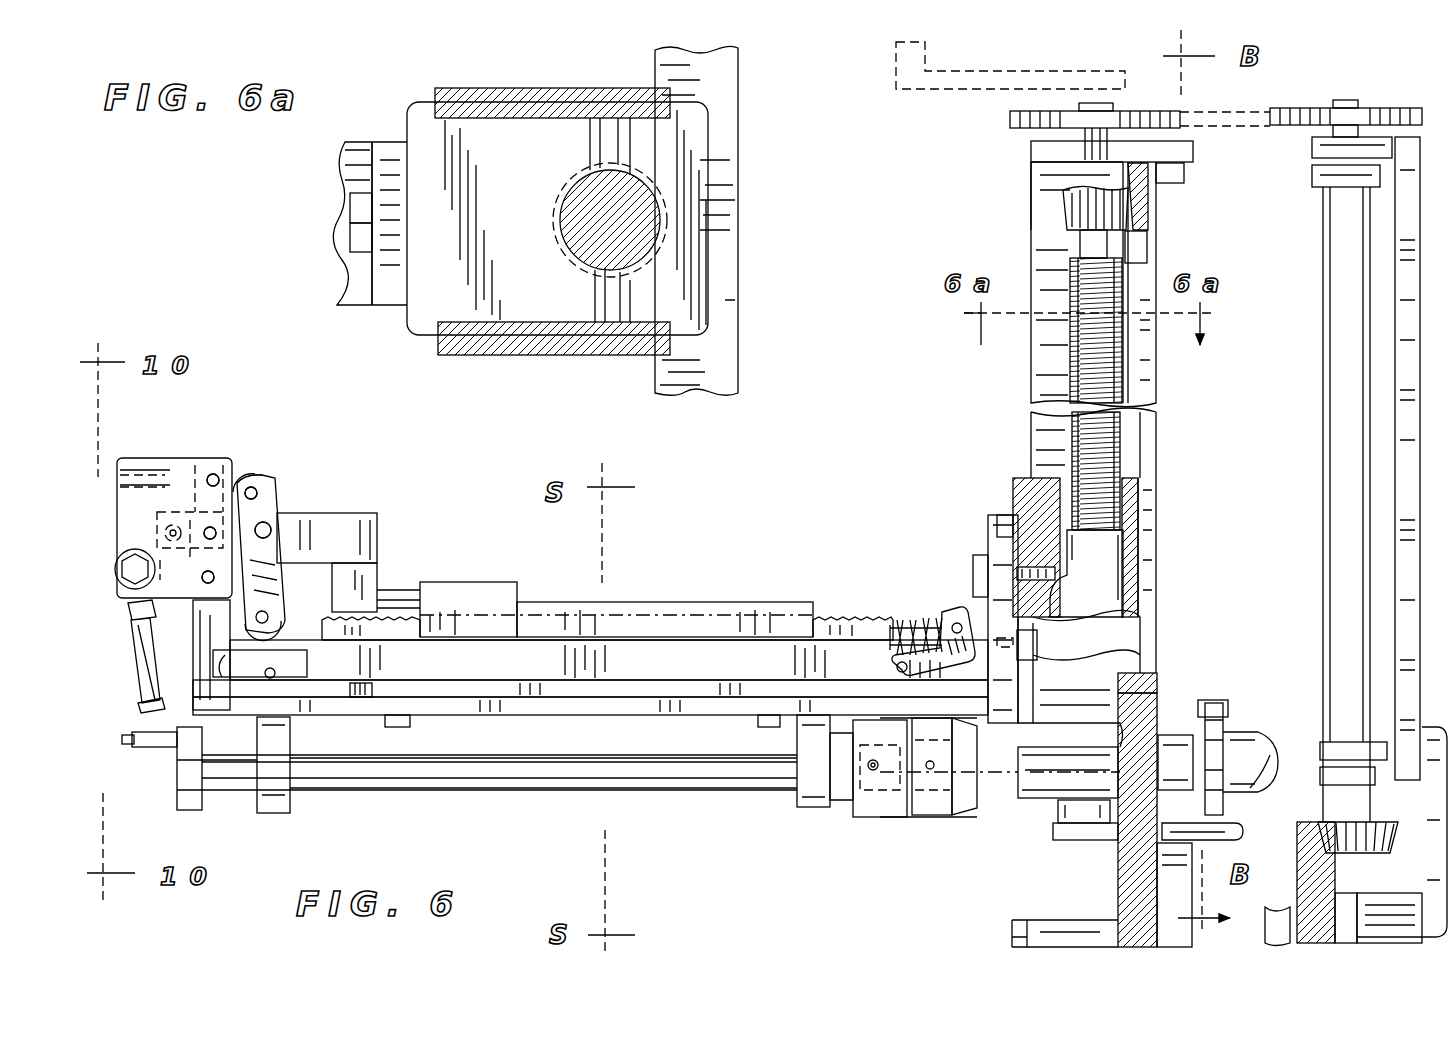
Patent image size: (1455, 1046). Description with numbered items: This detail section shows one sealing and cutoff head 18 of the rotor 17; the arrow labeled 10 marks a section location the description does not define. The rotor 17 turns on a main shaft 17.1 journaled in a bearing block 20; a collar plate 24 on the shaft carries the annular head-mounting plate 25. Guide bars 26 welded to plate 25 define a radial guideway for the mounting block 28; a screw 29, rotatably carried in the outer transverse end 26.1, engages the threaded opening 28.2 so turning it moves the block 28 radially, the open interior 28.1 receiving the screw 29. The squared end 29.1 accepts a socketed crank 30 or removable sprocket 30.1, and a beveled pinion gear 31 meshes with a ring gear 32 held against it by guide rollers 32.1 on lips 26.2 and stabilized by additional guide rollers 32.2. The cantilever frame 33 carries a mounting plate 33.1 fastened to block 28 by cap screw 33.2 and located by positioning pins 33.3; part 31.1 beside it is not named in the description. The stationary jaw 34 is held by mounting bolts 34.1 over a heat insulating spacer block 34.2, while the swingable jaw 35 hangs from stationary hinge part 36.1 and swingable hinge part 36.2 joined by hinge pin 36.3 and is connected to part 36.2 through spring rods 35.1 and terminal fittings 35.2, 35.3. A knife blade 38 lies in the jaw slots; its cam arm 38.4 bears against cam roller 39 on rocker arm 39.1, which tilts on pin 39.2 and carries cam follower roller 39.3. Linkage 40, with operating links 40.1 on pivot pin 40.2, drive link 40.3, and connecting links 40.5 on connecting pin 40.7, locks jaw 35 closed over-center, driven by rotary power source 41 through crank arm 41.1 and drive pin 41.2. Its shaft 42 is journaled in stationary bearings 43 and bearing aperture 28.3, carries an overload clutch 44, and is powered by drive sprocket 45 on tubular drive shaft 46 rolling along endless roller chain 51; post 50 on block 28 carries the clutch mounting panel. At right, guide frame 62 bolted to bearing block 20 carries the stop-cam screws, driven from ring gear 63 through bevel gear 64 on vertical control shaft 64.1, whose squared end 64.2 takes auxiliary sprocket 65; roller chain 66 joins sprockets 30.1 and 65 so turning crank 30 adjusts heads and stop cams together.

In FIG. 6, the lens grinding apparatus 10 is at (957, 344).
In FIG. 6, the rotor 17 is at (1018, 211).
In FIG. 6, the main shaft 17.1 is at (1280, 912).
In FIG. 6, the sealing and cutoff head 18 is at (855, 832).
In FIG. 6, the bearing block 20 is at (1440, 700).
In FIG. 6, the collar plate 24 is at (1165, 885).
In FIG. 6A, the head-mounting plate 25 is at (710, 352).
In FIG. 6, the head-mounting plate 25 is at (1118, 857).
In FIG. 6A, the guide bar 26 is at (570, 92).
In FIG. 6, the guide bar 26 is at (1035, 176).
In FIG. 6, the outer transverse end 26.1 is at (1035, 152).
In FIG. 6, the rearwardly extending lip 26.2 is at (1195, 150).
In FIG. 6A, the mounting block 28 is at (680, 153).
In FIG. 6, the mounting block 28 is at (1020, 478).
In FIG. 6, the open interior 28.1 is at (1100, 558).
In FIG. 6, the threaded opening 28.2 is at (1130, 500).
In FIG. 6, the bearing aperture 28.3 is at (1158, 700).
In FIG. 6A, the threaded rod 29 is at (597, 185).
In FIG. 6, the threaded rod 29 is at (1095, 373).
In FIG. 6, the squared end 29.1 is at (1096, 100).
In FIG. 6, the socketed crank 30 is at (940, 98).
In FIG. 6, the removable sprocket 30.1 is at (1040, 110).
In FIG. 6, the beveled pinion gear 31 is at (1068, 205).
In FIG. 6, the mounting plate 31.1 is at (988, 535).
In FIG. 6, the ring gear 32 is at (1150, 214).
In FIG. 6, the guide roller 32.1 is at (1186, 172).
In FIG. 6, the additional guide roller 32.2 is at (1150, 262).
In FIG. 6A, the cantilever frame 33 is at (345, 274).
In FIG. 6, the cantilever frame 33 is at (525, 683).
In FIG. 6A, the frame mounting plate 33.1 is at (395, 150).
In FIG. 6, the cap screw 33.2 is at (975, 582).
In FIG. 6, the positioning pin 33.3 is at (1002, 520).
In FIG. 6, the stationary jaw 34 is at (653, 667).
In FIG. 6, the mounting bolt 34.1 is at (400, 725).
In FIG. 6, the heat insulating spacer block 34.2 is at (370, 698).
In FIG. 6, the swingable jaw 35 is at (738, 602).
In FIG. 6, the spring rod 35.1 is at (545, 570).
In FIG. 6, the terminal fitting 35.2 is at (530, 583).
In FIG. 6, the terminal fitting 35.3 is at (375, 587).
In FIG. 6, the stationary hinge part 36.1 is at (190, 682).
In FIG. 6, the swingable hinge part 36.2 is at (378, 530).
In FIG. 6, the hinge pin 36.3 is at (170, 505).
In FIG. 6, the knife blade 38 is at (410, 643).
In FIG. 6, the cam arm 38.4 is at (218, 705).
In FIG. 6, the cam roller 39 is at (280, 630).
In FIG. 6, the rocker arm 39.1 is at (268, 487).
In FIG. 6, the pin 39.2 is at (275, 522).
In FIG. 6, the cam follower roller 39.3 is at (255, 478).
In FIG. 6, the linkage 40 is at (188, 455).
In FIG. 6, the operating link 40.1 is at (130, 530).
In FIG. 6, the pivot pin 40.2 is at (202, 578).
In FIG. 6, the drive link 40.3 is at (140, 702).
In FIG. 6, the connecting link 40.5 is at (228, 460).
In FIG. 6, the connecting pin 40.7 is at (215, 537).
In FIG. 6, the source of rotary power 41 is at (545, 789).
In FIG. 6, the rotary crank arm 41.1 is at (177, 796).
In FIG. 6, the drive pin 41.2 is at (130, 747).
In FIG. 6, the rotatable shaft 42 is at (710, 770).
In FIG. 6, the stationary bearing 43 is at (290, 808).
In FIG. 6, the overload clutch 44 is at (935, 820).
In FIG. 6, the drive sprocket 45 is at (1218, 728).
In FIG. 6, the tubular drive shaft 46 is at (1230, 740).
In FIG. 6, the post 50 is at (1243, 835).
In FIG. 6, the endless roller chain 51 is at (1200, 713).
In FIG. 6, the guide frame 62 is at (1410, 330).
In FIG. 6, the ring gear 63 is at (1308, 825).
In FIG. 6, the bevel gear 64 is at (1392, 850).
In FIG. 6, the vertical control shaft 64.1 is at (1340, 505).
In FIG. 6, the squared end 64.2 is at (1352, 115).
In FIG. 6, the auxiliary sprocket 65 is at (1392, 115).
In FIG. 6, the roller chain 66 is at (1248, 112).